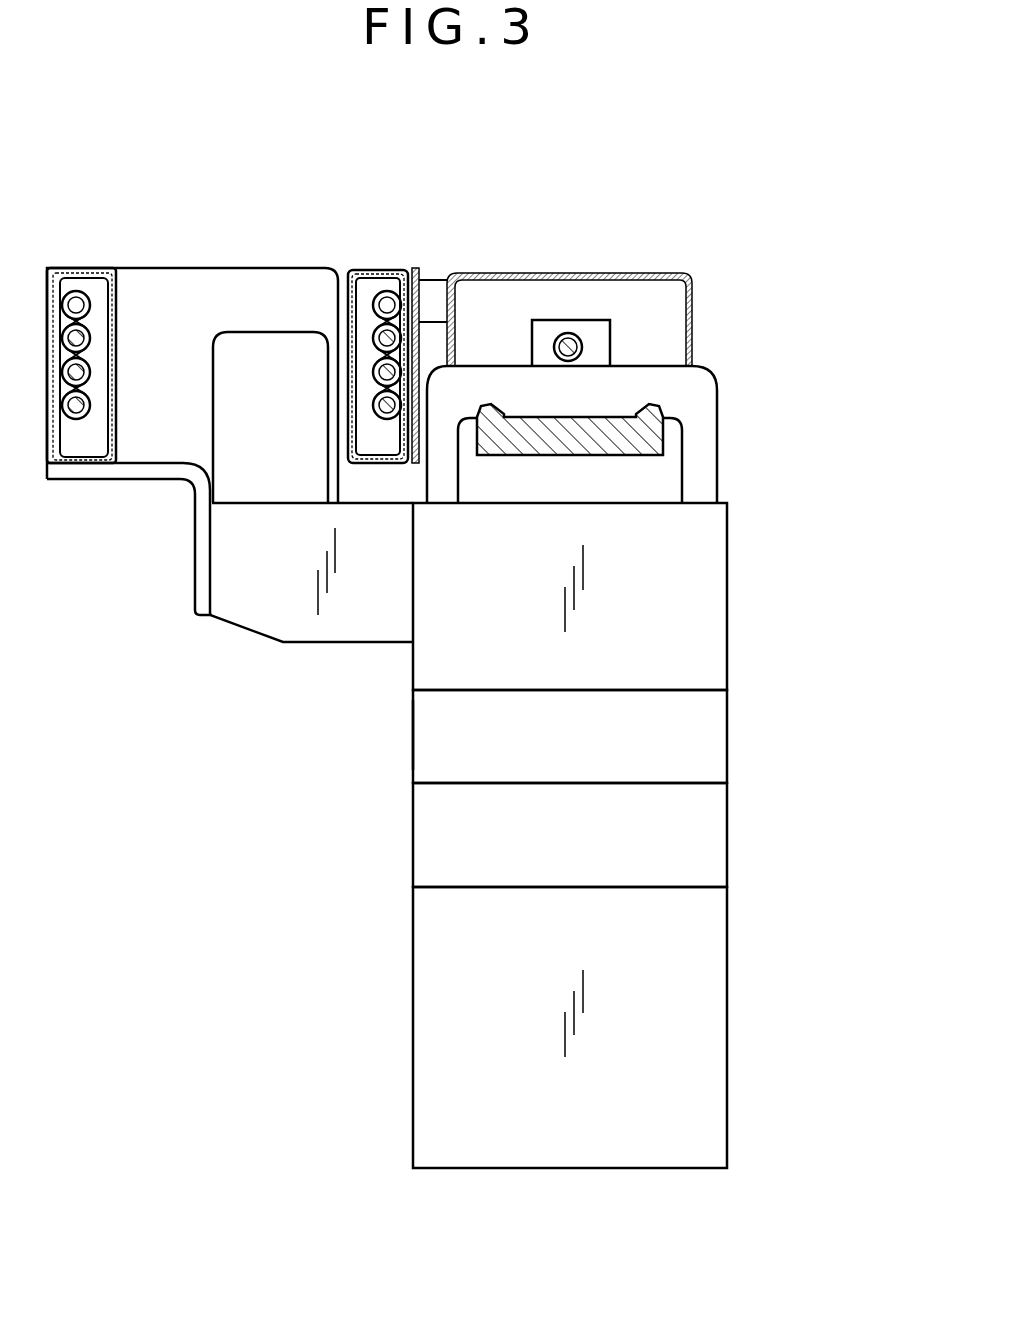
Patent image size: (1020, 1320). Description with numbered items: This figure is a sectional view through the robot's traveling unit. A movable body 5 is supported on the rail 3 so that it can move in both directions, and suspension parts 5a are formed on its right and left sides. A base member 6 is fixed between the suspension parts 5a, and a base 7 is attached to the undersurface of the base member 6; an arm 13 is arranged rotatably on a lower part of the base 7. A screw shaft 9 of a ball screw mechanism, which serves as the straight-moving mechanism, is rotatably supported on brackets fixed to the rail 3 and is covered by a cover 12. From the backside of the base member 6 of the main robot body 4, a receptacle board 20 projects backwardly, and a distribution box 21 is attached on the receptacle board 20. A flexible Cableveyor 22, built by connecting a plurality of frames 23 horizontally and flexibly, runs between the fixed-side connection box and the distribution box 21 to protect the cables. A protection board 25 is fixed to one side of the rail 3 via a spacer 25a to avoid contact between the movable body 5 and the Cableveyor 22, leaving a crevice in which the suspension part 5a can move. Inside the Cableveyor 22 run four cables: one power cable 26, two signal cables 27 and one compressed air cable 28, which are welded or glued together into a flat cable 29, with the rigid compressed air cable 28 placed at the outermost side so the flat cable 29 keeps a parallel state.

The rail 3 is at (663, 433).
The main robot body 4 is at (404, 750).
The movable body 5 is at (600, 320).
The suspension part 5a is at (458, 478).
The base member 6 is at (727, 587).
The base 7 is at (727, 737).
The screw shaft 9 is at (568, 333).
The cover 12 is at (692, 273).
The arm 13 is at (727, 1030).
The receptacle board 20 is at (195, 595).
The distribution box 21 is at (277, 268).
The Cableveyor 22 is at (374, 263).
The frame 23 is at (117, 308).
The protection board 25 is at (416, 270).
The spacer 25a is at (435, 278).
The power cable 26 is at (90, 328).
The signal cable 27 is at (90, 402).
The compressed air cable 28 is at (80, 291).
The flat cable 29 is at (72, 426).